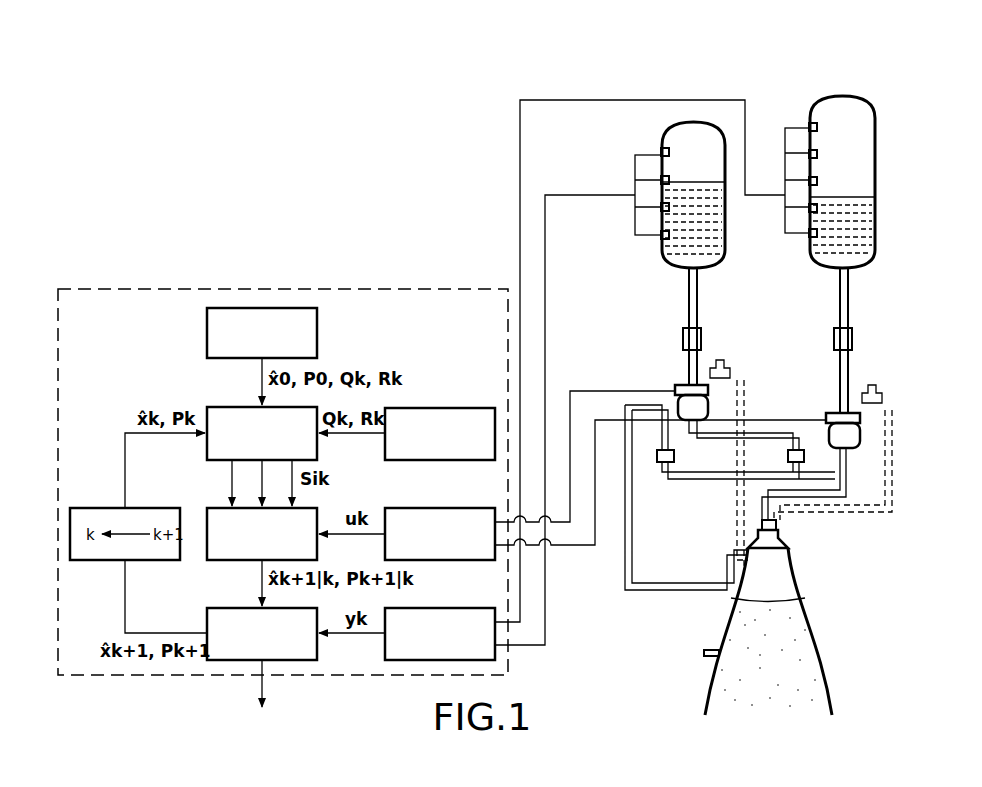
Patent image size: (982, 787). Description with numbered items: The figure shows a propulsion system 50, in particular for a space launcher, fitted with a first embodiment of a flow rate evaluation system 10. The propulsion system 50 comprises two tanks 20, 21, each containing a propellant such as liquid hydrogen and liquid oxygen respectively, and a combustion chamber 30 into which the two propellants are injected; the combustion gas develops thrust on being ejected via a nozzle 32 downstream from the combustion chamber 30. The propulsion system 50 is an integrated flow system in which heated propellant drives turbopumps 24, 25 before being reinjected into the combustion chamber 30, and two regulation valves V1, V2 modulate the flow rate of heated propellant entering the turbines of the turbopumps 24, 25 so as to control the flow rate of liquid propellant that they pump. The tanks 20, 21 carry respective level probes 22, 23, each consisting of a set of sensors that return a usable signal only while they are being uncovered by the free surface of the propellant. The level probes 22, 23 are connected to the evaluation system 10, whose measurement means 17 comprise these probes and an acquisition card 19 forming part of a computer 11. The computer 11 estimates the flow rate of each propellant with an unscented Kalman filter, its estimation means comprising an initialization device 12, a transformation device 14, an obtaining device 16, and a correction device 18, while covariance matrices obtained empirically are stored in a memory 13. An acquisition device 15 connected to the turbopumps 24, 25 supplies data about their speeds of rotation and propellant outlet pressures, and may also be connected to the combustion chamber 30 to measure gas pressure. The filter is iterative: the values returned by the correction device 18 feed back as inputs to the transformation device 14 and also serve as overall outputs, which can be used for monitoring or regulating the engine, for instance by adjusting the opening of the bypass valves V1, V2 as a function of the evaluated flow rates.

The flow rate evaluation system 10 is at (310, 95).
The computer 11 is at (283, 289).
The initialization device 12 is at (262, 333).
The memory 13 is at (440, 434).
The transformation device 14 is at (262, 433).
The acquisition device 15 is at (440, 534).
The obtaining device 16 is at (262, 534).
The measurement means 17 is at (656, 82).
The correction device 18 is at (262, 634).
The acquisition card 19 is at (440, 634).
The first tank 20 is at (668, 262).
The second tank 21 is at (816, 262).
The level probe 22 is at (662, 152).
The level probe 23 is at (810, 127).
The turbopump 24 is at (688, 405).
The turbopump 25 is at (843, 432).
The combustion chamber 30 is at (782, 578).
The nozzle 32 is at (812, 648).
The propulsion system 50 is at (797, 85).
The regulation valve V1 is at (665, 462).
The regulation valve V2 is at (797, 450).